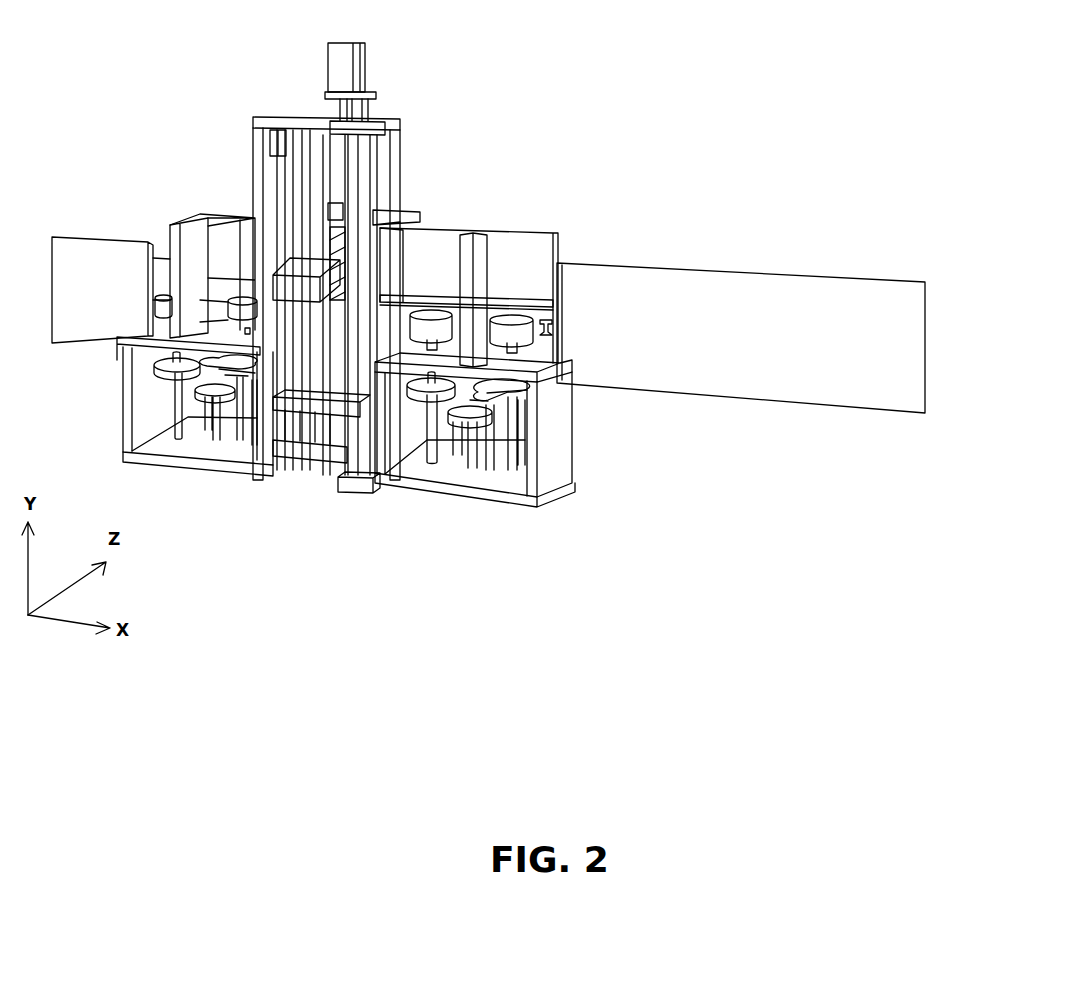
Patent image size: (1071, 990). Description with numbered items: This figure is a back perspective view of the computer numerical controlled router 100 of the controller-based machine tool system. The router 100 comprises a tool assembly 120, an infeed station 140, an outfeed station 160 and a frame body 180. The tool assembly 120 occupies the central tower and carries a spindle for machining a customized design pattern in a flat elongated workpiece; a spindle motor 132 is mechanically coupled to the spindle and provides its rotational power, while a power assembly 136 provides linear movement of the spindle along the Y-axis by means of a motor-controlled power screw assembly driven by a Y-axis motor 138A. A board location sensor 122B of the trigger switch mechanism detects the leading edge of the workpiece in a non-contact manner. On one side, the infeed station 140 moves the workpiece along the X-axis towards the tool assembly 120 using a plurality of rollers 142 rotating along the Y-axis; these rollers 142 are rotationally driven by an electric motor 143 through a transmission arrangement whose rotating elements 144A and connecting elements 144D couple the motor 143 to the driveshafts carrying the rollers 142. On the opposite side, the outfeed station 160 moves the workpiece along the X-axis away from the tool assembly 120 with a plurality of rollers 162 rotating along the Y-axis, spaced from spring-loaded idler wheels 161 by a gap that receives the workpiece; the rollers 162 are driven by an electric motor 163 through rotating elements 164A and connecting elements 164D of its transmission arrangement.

The computer numerical controlled (CNC) router 100 is at (588, 88).
The tool assembly 120 is at (384, 130).
The board location sensor 122B is at (272, 140).
The spindle motor 132 is at (296, 300).
The power assembly 136 is at (351, 76).
The Y-axis motor 138A is at (333, 92).
The infeed station 140 is at (210, 335).
The rollers 142 is at (166, 300).
The electric motor 143 is at (238, 418).
The rotating elements 144A is at (212, 392).
The connecting elements 144D is at (178, 372).
The outfeed station 160 is at (503, 430).
The spring-loaded idler wheels 161 is at (556, 300).
The rollers 162 is at (440, 332).
The electric motor 163 is at (490, 438).
The rotating elements 164A is at (493, 405).
The connecting elements 164D is at (486, 407).
The frame body 180 is at (190, 228).